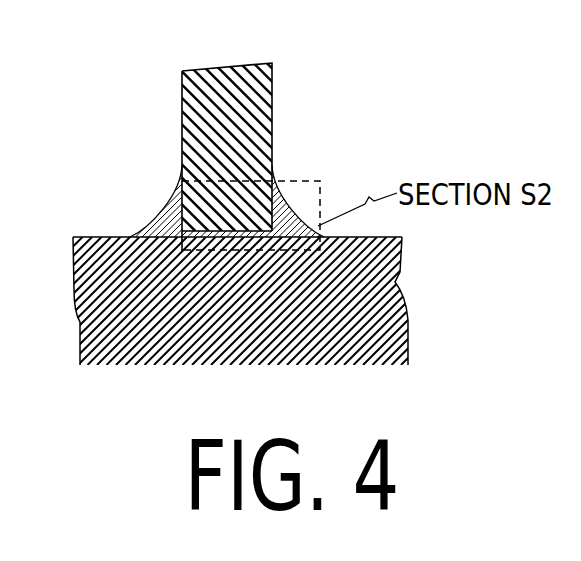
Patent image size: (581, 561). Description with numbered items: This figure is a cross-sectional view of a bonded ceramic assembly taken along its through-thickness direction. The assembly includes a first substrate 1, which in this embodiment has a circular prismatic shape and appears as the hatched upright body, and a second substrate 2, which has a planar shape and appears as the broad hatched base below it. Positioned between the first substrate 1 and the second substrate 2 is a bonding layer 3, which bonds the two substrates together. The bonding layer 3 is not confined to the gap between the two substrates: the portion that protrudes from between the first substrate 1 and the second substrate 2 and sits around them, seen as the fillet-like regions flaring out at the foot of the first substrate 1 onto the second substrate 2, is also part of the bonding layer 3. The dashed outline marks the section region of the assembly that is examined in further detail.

The first substrate 1 is at (253, 112).
The second substrate 2 is at (396, 281).
The bonding layer 3 is at (160, 231).